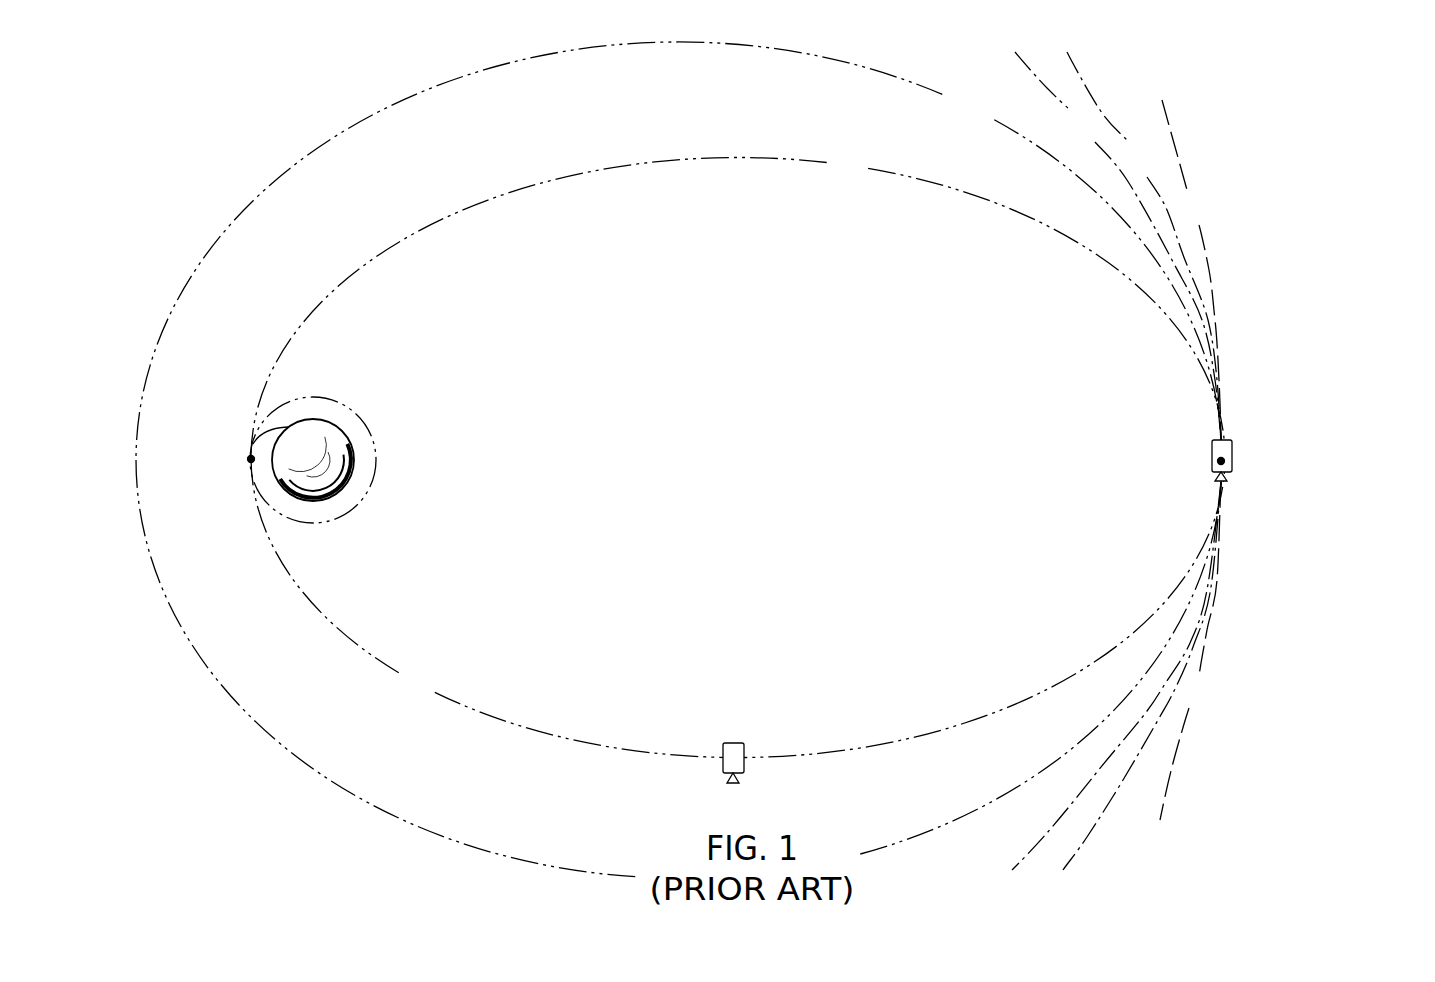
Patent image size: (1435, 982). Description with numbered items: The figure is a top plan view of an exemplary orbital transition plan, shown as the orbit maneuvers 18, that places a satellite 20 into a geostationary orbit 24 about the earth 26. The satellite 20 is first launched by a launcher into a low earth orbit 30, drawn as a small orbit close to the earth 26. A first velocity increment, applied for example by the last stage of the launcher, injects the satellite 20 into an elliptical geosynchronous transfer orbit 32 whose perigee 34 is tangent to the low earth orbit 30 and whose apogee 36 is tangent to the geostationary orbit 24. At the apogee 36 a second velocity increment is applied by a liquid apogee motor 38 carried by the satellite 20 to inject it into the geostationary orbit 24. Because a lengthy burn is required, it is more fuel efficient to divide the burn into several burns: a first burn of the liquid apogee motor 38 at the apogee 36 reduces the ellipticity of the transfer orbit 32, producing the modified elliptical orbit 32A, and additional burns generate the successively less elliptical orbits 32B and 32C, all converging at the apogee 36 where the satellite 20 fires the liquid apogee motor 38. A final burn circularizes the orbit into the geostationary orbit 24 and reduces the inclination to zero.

The orbit maneuvers 18 is at (1253, 315).
The satellite 20 is at (1207, 456).
The geostationary orbit (GEO) 24 is at (1190, 460).
The earth 26 is at (356, 481).
The low earth orbit (LEO) 30 is at (373, 438).
The geosynchronous transfer orbit (GTO) 32 is at (738, 457).
The modified elliptical orbit 32A is at (679, 459).
The elliptical orbit 32B is at (1116, 461).
The elliptical orbit 32C is at (1142, 461).
The perigee 34 is at (250, 459).
The apogee 36 is at (1233, 470).
The liquid apogee motor (LAM) 38 is at (1229, 477).